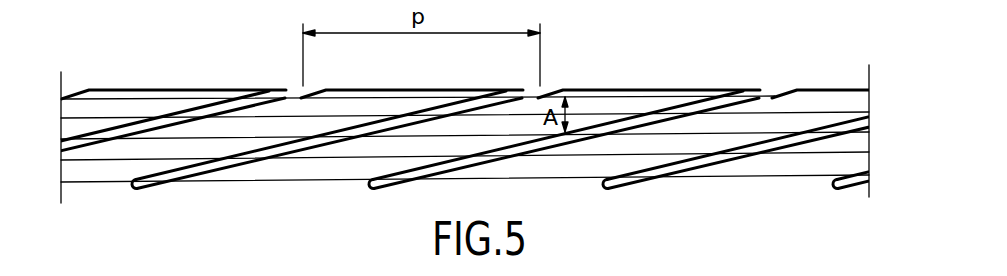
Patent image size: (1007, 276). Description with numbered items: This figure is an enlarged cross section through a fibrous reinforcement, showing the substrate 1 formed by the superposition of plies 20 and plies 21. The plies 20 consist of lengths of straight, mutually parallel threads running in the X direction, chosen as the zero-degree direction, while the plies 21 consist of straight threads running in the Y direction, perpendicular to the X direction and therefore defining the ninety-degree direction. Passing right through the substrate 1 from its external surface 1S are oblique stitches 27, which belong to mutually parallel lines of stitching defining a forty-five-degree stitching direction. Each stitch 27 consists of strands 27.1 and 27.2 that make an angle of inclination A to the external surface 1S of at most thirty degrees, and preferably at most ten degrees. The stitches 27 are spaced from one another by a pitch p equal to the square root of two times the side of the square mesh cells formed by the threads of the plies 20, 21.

The substrate 1 is at (102, 42).
The external surface 1S is at (192, 100).
The plies 20 is at (797, 100).
The plies 21 is at (808, 120).
The oblique stitches 27 is at (648, 97).
The strand 27.1 is at (360, 127).
The strand 27.2 is at (488, 107).